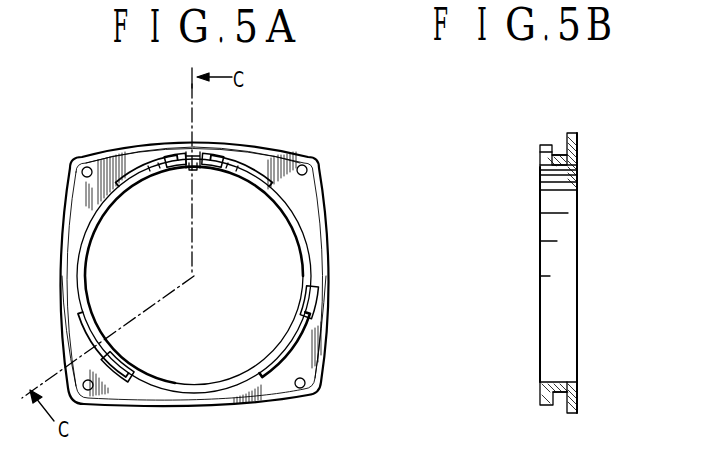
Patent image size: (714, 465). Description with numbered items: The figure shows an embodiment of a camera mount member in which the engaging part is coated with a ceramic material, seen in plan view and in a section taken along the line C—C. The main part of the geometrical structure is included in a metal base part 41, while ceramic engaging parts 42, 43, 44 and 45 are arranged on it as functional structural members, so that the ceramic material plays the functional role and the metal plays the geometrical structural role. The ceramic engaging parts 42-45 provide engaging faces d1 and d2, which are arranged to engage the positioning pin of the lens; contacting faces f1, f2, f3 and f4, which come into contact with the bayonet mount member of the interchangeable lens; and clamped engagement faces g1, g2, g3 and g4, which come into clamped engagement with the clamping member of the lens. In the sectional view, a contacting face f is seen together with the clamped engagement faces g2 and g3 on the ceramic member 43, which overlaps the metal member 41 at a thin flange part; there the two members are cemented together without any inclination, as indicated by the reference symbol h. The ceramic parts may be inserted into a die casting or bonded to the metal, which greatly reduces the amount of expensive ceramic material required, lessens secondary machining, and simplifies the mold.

In FIG. 5A, the base part 41 is at (314, 196).
In FIG. 5B, the base part 41 is at (568, 132).
In FIG. 5A, the ceramic engaging part 42 is at (258, 162).
In FIG. 5A, the ceramic engaging part 43 is at (138, 154).
In FIG. 5B, the ceramic engaging part 43 is at (546, 146).
In FIG. 5A, the ceramic engaging part 44 is at (80, 348).
In FIG. 5A, the ceramic engaging part 45 is at (311, 340).
In FIG. 5A, the engaging face d1 is at (200, 150).
In FIG. 5A, the engaging face d2 is at (194, 174).
In FIG. 5A, the clamped engagement face g1 is at (218, 153).
In FIG. 5A, the clamped engagement face g2 is at (176, 152).
In FIG. 5B, the clamped engagement face g2 is at (558, 157).
In FIG. 5A, the clamped engagement face g3 is at (113, 371).
In FIG. 5B, the clamped engagement face g3 is at (554, 403).
In FIG. 5A, the clamped engagement face g4 is at (312, 302).
In FIG. 5A, the contacting face f1 is at (232, 170).
In FIG. 5A, the contacting face f2 is at (143, 181).
In FIG. 5A, the contacting face f3 is at (88, 328).
In FIG. 5A, the contacting face f4 is at (288, 362).
In FIG. 5B, the flange f is at (540, 153).
In FIG. 5B, the flanged joining part h is at (541, 390).